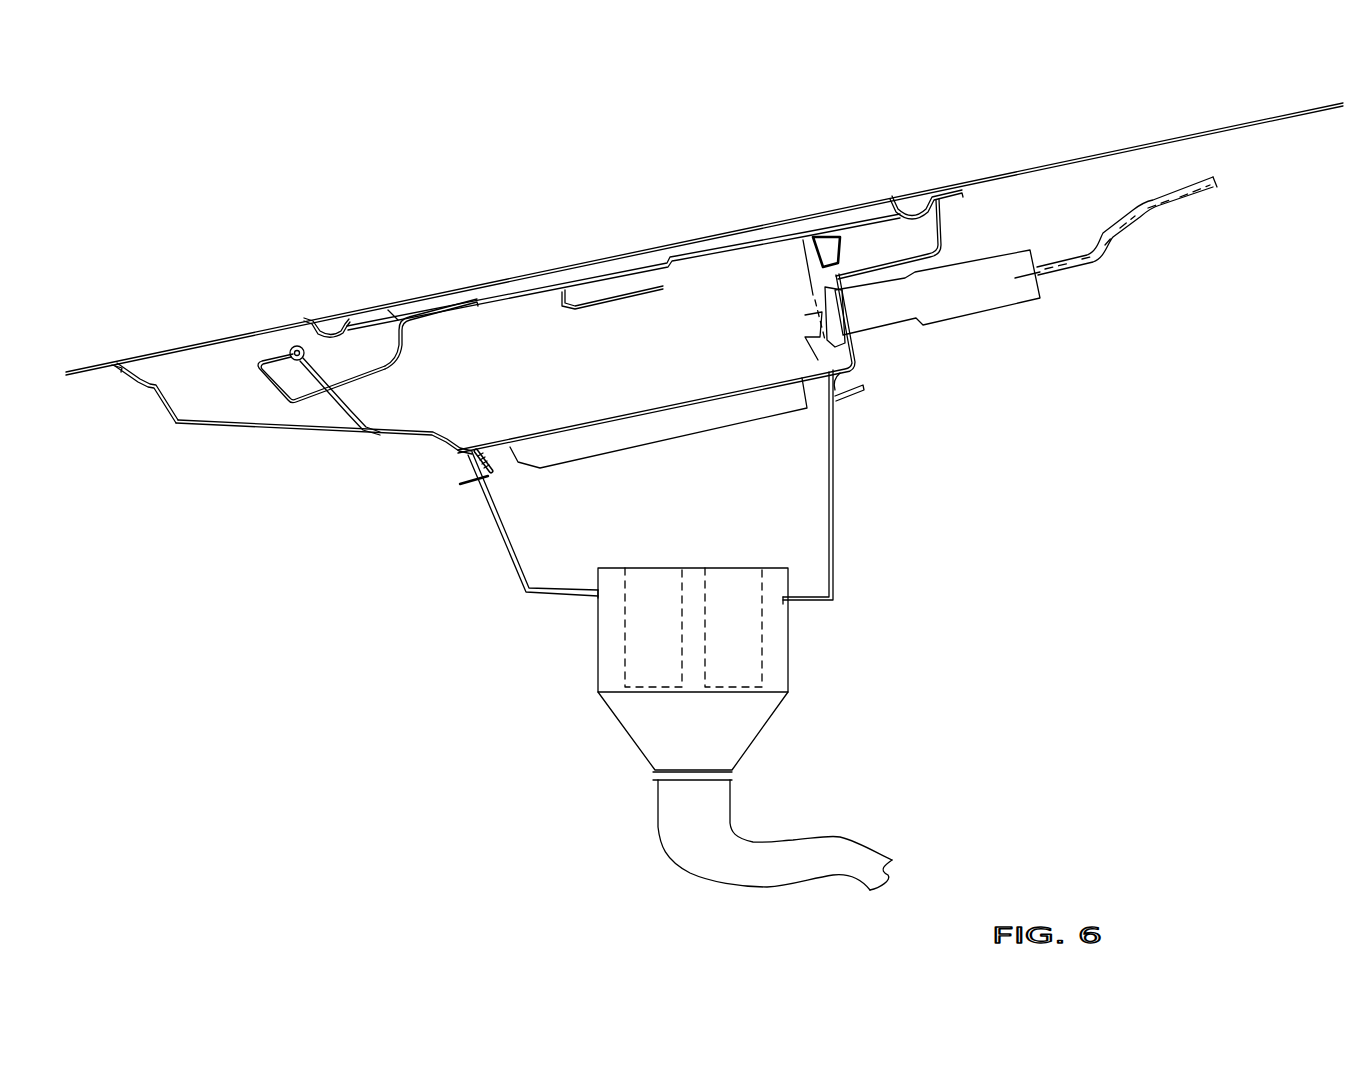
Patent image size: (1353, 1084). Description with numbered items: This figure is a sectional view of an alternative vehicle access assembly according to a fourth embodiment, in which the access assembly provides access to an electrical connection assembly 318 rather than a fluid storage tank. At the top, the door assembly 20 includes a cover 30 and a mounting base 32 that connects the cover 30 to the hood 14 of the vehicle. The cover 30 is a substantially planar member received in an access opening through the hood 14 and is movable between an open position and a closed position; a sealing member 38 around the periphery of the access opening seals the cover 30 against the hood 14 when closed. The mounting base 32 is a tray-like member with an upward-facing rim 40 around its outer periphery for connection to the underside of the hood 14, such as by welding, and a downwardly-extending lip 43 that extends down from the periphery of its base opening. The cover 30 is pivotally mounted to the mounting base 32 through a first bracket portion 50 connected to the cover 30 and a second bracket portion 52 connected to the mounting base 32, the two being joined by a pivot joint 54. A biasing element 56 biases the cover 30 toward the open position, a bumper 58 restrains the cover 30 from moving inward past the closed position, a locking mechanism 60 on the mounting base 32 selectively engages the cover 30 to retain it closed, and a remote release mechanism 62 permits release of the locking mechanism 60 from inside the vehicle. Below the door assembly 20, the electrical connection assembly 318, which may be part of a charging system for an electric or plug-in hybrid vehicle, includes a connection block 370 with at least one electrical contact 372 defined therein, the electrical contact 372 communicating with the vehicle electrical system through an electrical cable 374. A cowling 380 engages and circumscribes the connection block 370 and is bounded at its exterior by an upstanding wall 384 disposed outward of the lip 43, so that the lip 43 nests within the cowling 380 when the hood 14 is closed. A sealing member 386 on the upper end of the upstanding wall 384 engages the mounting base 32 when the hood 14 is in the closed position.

The hood 14 is at (83, 366).
The door assembly 20 is at (513, 212).
The cover 30 is at (682, 263).
The mounting base 32 is at (281, 434).
The sealing member 38 is at (331, 334).
The upward-facing rim 40 is at (118, 360).
The downwardly-extending lip 43 is at (513, 505).
The first bracket portion 50 is at (270, 387).
The second bracket portion 52 is at (350, 422).
The pivot joint 54 is at (292, 348).
The biasing element 56 is at (400, 322).
The bumper 58 is at (828, 237).
The locking mechanism 60 is at (1028, 250).
The remote release mechanism 62 is at (1190, 186).
The electrical connection assembly 318 is at (957, 502).
The connection block 370 is at (790, 672).
The electrical contact 372 is at (765, 603).
The electrical cable 374 is at (843, 835).
The cowling 380 is at (858, 563).
The upstanding wall 384 is at (522, 572).
The sealing member 386 is at (475, 462).